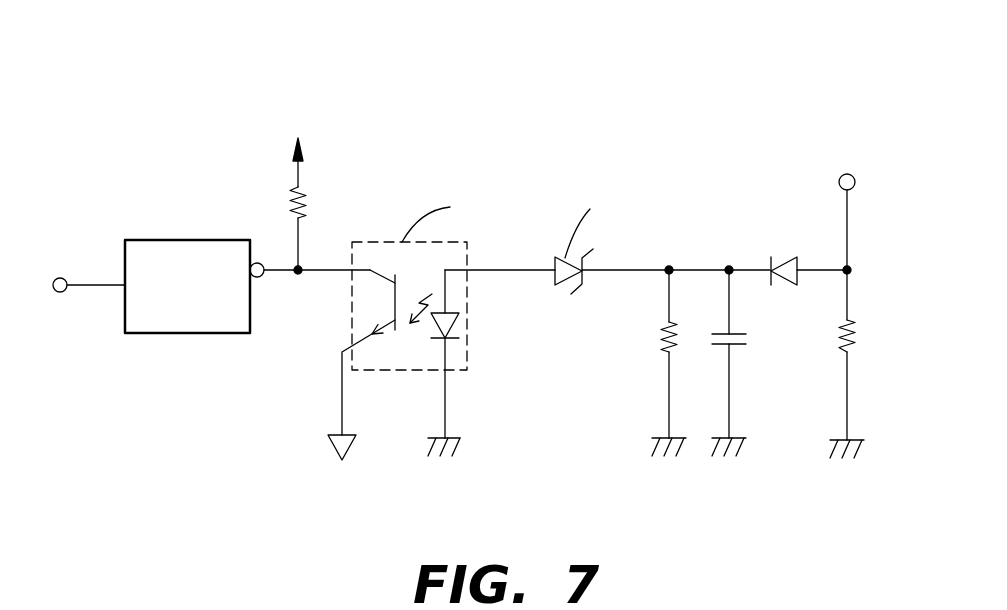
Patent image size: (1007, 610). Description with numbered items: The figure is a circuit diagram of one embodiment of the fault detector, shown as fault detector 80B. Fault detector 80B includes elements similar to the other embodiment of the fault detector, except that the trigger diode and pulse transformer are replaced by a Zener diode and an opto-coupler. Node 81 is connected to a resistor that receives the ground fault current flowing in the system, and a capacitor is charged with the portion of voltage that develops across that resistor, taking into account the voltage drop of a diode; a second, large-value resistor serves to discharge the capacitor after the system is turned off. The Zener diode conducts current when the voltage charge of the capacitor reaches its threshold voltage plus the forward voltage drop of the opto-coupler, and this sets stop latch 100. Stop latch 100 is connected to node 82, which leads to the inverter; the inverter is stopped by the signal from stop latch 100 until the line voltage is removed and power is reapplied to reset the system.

The node 82 is at (53, 282).
The stop latch 100 is at (140, 240).
The fault detector 80B is at (603, 115).
The node 81 is at (850, 174).